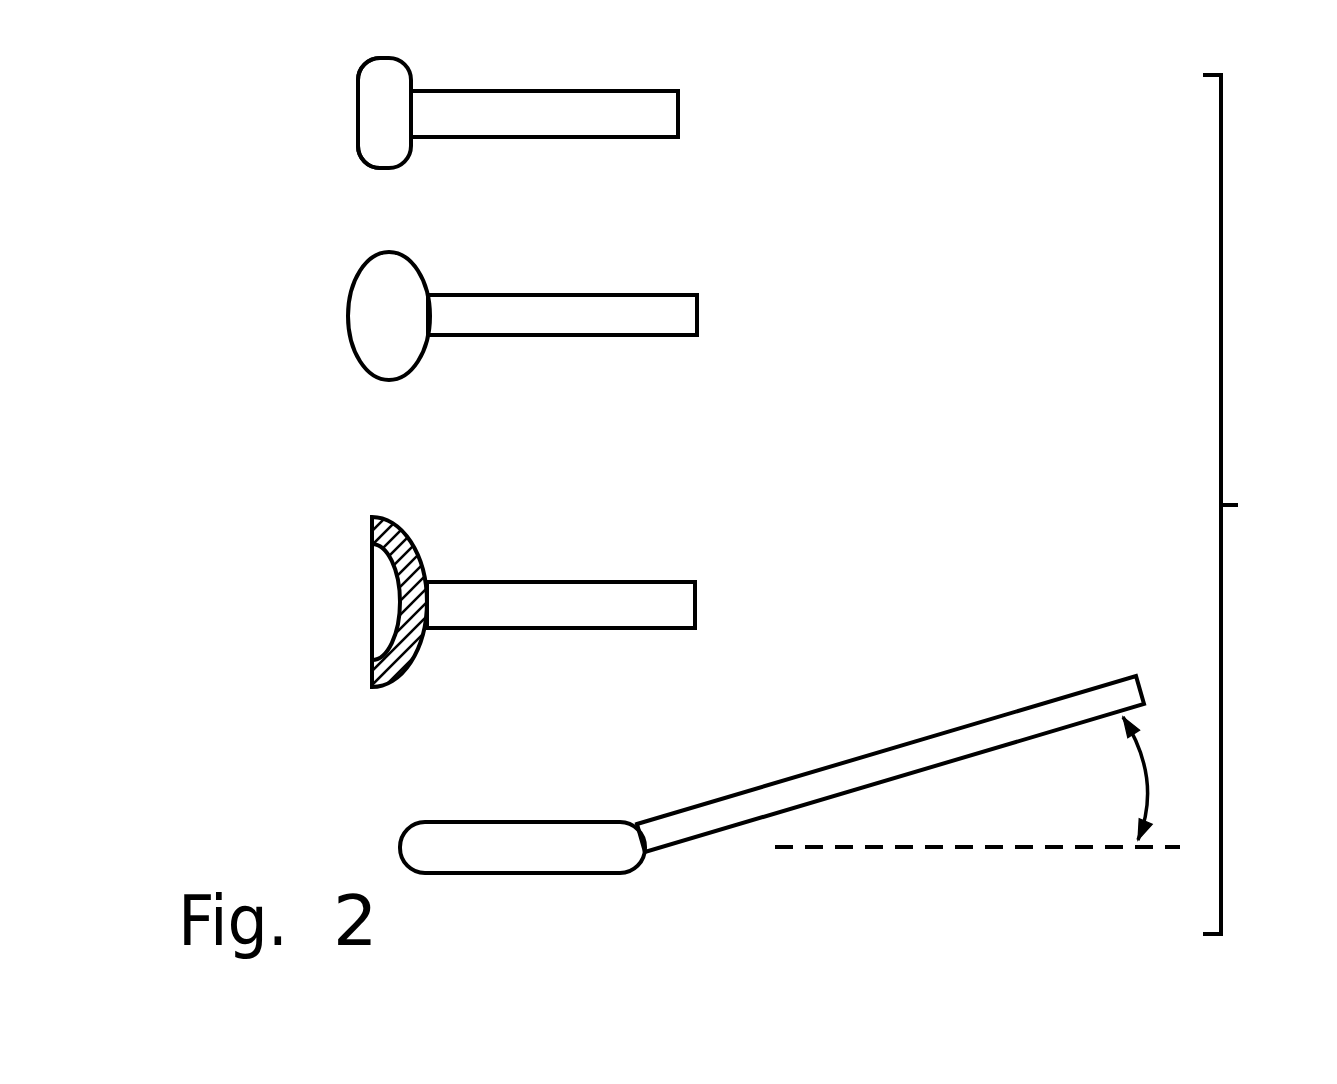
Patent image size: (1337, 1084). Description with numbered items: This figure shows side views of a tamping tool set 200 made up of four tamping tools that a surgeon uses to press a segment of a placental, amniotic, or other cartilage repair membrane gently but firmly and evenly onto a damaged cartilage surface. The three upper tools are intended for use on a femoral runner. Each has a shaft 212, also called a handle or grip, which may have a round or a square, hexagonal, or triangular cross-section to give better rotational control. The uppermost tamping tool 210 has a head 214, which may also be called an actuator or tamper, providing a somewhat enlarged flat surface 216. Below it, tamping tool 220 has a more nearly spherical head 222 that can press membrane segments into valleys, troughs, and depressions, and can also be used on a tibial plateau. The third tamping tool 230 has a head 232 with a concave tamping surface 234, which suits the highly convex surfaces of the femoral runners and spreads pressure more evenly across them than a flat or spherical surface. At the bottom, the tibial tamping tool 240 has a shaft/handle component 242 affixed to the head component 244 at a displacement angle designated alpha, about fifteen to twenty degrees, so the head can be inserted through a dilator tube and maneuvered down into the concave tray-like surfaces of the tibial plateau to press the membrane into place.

The tamping tool set 200 is at (1265, 504).
The tamping tool 210 is at (691, 134).
The shaft 212 is at (694, 143).
The head 214 is at (424, 156).
The flat surface 216 is at (348, 102).
The tamping tool 220 is at (724, 313).
The domed head 222 is at (440, 283).
The tamping tool 230 is at (596, 591).
The head 232 is at (428, 509).
The concave tamping surface 234 is at (386, 596).
The tibial tamping tool 240 is at (790, 685).
The shaft/handle component 242 is at (968, 711).
The head component 244 is at (527, 809).